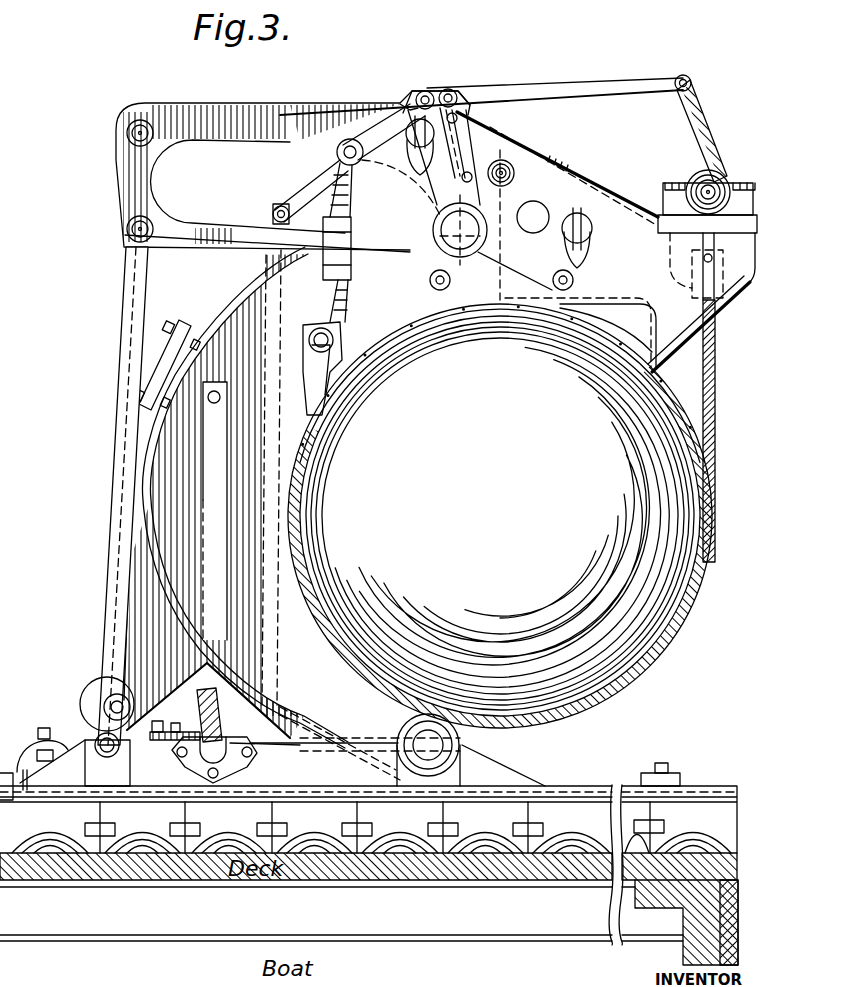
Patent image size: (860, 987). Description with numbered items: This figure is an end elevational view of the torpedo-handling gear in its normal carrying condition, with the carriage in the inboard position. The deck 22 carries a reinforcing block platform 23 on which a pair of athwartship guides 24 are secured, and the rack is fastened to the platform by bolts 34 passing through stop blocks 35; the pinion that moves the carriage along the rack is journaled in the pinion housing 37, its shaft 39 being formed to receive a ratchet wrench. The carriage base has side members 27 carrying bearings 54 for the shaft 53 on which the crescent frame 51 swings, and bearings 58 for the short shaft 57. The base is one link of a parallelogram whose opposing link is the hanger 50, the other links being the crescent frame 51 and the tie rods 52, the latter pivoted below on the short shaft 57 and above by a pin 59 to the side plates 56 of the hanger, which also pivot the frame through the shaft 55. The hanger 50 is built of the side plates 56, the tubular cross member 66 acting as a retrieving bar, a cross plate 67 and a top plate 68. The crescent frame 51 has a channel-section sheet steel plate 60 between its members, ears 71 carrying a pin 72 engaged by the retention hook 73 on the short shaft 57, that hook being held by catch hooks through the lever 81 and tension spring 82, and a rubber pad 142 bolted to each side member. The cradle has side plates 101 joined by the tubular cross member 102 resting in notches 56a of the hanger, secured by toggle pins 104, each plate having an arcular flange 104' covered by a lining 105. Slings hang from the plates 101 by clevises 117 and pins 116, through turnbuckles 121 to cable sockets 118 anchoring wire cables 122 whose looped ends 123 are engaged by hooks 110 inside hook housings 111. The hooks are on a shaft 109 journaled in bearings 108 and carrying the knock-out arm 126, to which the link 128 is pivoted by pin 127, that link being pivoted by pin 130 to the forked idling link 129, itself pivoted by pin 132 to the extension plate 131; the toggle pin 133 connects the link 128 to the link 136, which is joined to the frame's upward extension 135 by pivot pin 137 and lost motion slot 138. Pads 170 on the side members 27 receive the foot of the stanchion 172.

The hanger 50 is at (104, 182).
The side plates of the hanger 56 is at (214, 106).
The top plate 68 is at (284, 108).
The tubular cross member 66 is at (131, 128).
The pin 59 is at (127, 231).
The toggle pin 133 is at (427, 90).
The pin 130 is at (470, 77).
The forked idling link 129 is at (468, 128).
The link 136 is at (412, 104).
The clevises 117 is at (345, 148).
The pins 116 is at (350, 140).
The lost motion slot 138 is at (333, 196).
The pivot pin 137 is at (272, 213).
The turnbuckles 121 is at (348, 262).
The cable sockets 118 is at (336, 392).
The link 128 is at (580, 86).
The pin 127 is at (680, 76).
The arm 126 is at (705, 125).
The extension plate 131 is at (474, 128).
The notches 56a is at (505, 142).
The side plates of the cradle 101 is at (572, 182).
The tubular cross member 102 is at (516, 172).
The bearings 108 is at (662, 200).
The shaft 109 is at (712, 181).
The toggle pins 104 is at (503, 192).
The cross plate 67 is at (432, 218).
The pin 132 is at (530, 228).
The shaft 55 is at (543, 259).
The hooks 110 is at (668, 258).
The hook housing 111 is at (692, 283).
The arcular flange 104' is at (630, 328).
The looped ends 123 is at (730, 298).
The lining 105 is at (700, 383).
The wire cable 122 is at (626, 684).
The upward extension 135 is at (260, 284).
The crescent frame 51 is at (165, 516).
The ears 71 is at (130, 627).
The sheet steel plate 60 is at (278, 660).
The stanchion 172 is at (205, 470).
The pad 142 is at (158, 370).
The tie rods 52 is at (128, 430).
The retention hook 73 is at (98, 688).
The pin 72 is at (126, 706).
The lever 81 is at (217, 712).
The pads 170 is at (242, 768).
The tension spring 82 is at (175, 745).
The bearings 58 is at (95, 774).
The short shaft 57 is at (100, 738).
The pinion housing 37 is at (40, 728).
The shaft 39 is at (32, 760).
The guides 24 is at (333, 786).
The reinforcing block platform 23 is at (614, 825).
The deck 22 is at (742, 866).
The bolts 34 is at (660, 768).
The stop blocks 35 is at (678, 775).
The shaft 53 is at (405, 735).
The bearings 54 is at (468, 743).
The side members 27 is at (300, 738).